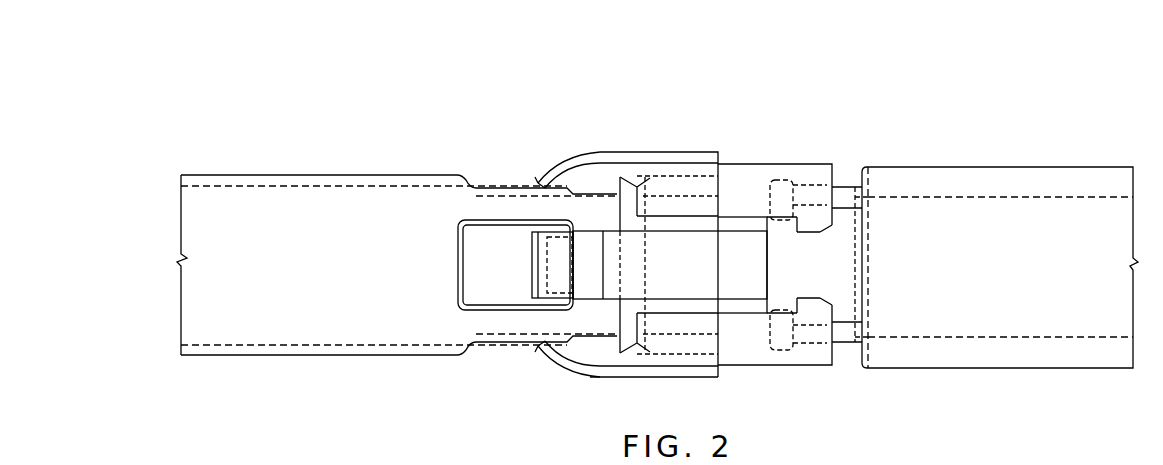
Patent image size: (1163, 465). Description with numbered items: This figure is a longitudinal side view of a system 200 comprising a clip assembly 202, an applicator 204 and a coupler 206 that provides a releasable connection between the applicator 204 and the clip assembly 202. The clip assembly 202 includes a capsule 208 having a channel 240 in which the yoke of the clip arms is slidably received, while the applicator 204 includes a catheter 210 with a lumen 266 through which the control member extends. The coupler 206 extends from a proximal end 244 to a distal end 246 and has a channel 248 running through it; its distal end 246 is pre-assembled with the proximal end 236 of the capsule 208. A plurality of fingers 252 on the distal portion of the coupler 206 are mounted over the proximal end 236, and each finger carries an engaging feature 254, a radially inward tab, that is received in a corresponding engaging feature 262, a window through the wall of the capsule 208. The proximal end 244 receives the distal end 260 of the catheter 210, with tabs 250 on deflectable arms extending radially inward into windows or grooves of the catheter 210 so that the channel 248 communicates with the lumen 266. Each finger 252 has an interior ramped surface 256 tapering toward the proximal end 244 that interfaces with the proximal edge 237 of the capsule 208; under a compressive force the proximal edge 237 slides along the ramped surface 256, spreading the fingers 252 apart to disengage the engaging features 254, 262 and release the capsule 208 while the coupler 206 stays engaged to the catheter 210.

The system 200 is at (448, 106).
The clip assembly 202 is at (313, 118).
The applicator 204 is at (996, 118).
The coupler 206 is at (702, 152).
The capsule 208 is at (240, 172).
The catheter 210 is at (1066, 165).
The proximal end of the capsule 236 is at (612, 195).
The proximal edge of the capsule 237 is at (636, 178).
The channel of the capsule 240 is at (358, 205).
The proximal end of the coupler 244 is at (810, 172).
The distal end of the coupler 246 is at (540, 183).
The channel of the coupler 248 is at (697, 263).
The tabs 250 is at (820, 232).
The fingers 252 is at (614, 150).
The engaging feature of the fingers 254 is at (533, 258).
The ramped surface 256 is at (656, 178).
The distal end of the catheter 260 is at (778, 183).
The engaging feature of the capsule 262 is at (488, 345).
The lumen of the catheter 266 is at (915, 207).